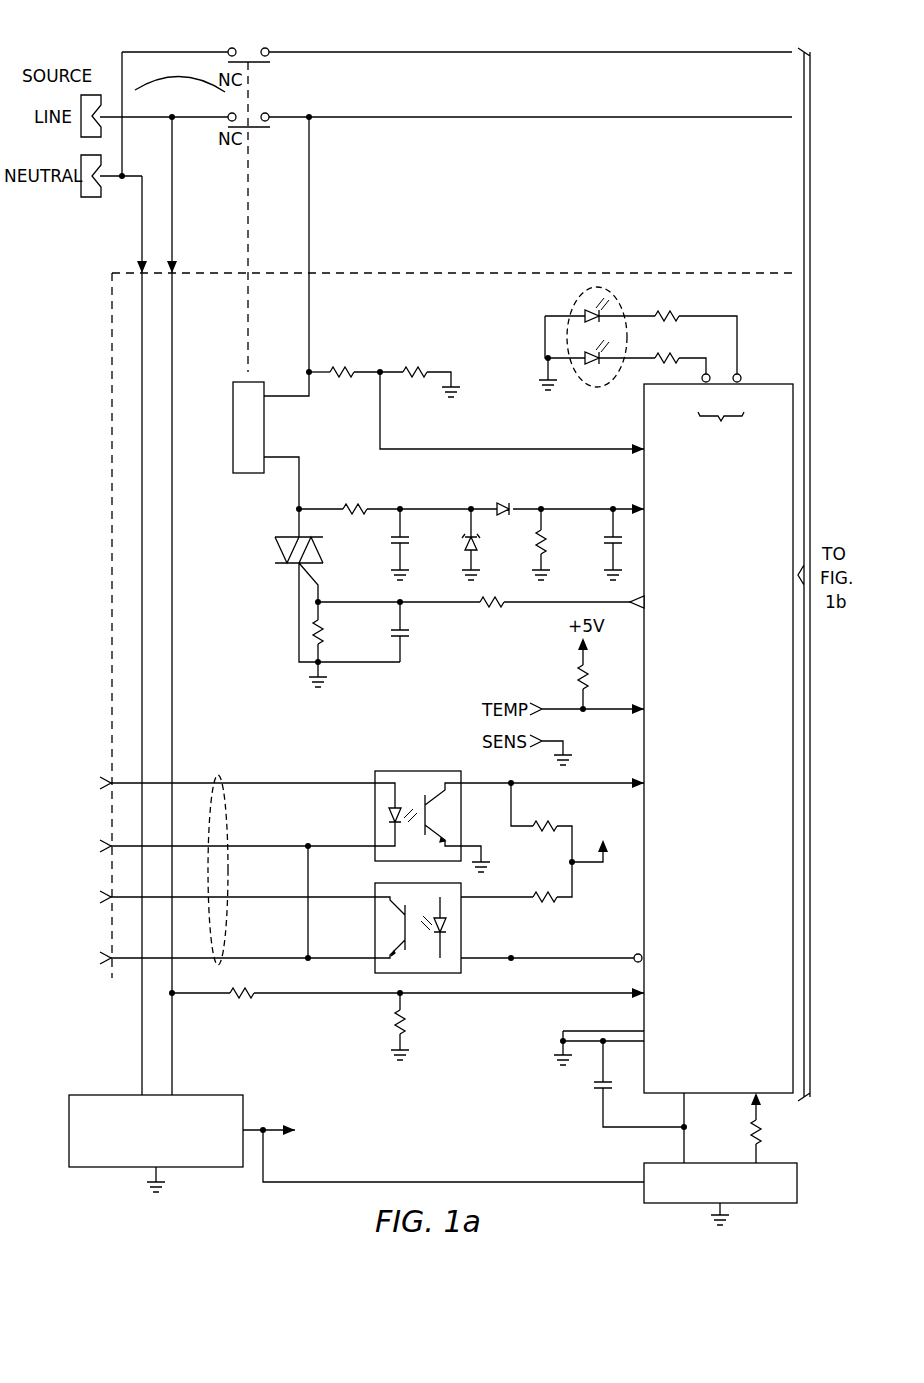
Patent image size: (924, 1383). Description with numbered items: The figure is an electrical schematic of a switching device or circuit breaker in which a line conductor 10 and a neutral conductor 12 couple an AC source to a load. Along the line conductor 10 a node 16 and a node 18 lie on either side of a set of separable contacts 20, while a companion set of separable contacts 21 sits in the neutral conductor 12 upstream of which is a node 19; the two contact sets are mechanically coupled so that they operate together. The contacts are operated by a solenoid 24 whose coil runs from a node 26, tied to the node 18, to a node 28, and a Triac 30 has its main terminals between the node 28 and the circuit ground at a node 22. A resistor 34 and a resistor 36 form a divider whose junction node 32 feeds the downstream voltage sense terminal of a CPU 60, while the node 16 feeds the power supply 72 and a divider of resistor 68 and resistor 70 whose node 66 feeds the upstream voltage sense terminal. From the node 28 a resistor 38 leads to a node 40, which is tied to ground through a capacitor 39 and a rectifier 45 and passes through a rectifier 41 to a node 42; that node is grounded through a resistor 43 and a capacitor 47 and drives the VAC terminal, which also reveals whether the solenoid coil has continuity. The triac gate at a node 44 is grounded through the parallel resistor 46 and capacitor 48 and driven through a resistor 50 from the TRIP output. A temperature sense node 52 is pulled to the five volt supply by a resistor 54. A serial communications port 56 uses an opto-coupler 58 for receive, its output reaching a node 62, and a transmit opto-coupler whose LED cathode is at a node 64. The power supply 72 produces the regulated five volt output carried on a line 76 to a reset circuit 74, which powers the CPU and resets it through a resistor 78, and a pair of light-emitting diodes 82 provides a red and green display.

The line conductor 10 is at (194, 109).
The neutral conductor 12 is at (198, 51).
The node 16 is at (176, 120).
The node 18 is at (312, 120).
The node 19 is at (124, 173).
The separable contacts 20 is at (264, 128).
The separable contacts 21 is at (255, 50).
The node 22 is at (152, 1184).
The solenoid 24 is at (266, 420).
The node 26 is at (315, 379).
The node 28 is at (313, 506).
The Triac 30 is at (276, 554).
The node 32 is at (383, 377).
The resistor 34 is at (345, 367).
The resistor 36 is at (416, 367).
The resistor 38 is at (361, 506).
The capacitor 39 is at (390, 542).
The node 40 is at (468, 506).
The rectifier 41 is at (504, 502).
The node 42 is at (542, 506).
The resistor 43 is at (536, 546).
The node 44 is at (323, 600).
The rectifier 45 is at (465, 540).
The resistor 46 is at (325, 630).
The capacitor 47 is at (606, 541).
The capacitor 48 is at (406, 638).
The resistor 50 is at (492, 606).
The node 52 is at (588, 706).
The resistor 54 is at (578, 682).
The RS-232 communications port 56 is at (219, 776).
The opto-coupler 58 is at (412, 769).
The CPU 60 is at (738, 786).
The node 62 is at (508, 786).
The node 64 is at (514, 956).
The node 66 is at (402, 998).
The resistor 68 is at (238, 1000).
The resistor 70 is at (394, 1030).
The power supply 72 is at (183, 1170).
The reset circuit 74 is at (800, 1183).
The line 76 is at (436, 1179).
The resistor 78 is at (760, 1132).
The light-emitting diodes 82 is at (596, 388).